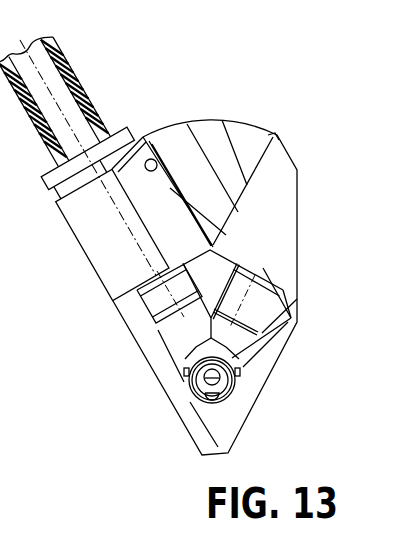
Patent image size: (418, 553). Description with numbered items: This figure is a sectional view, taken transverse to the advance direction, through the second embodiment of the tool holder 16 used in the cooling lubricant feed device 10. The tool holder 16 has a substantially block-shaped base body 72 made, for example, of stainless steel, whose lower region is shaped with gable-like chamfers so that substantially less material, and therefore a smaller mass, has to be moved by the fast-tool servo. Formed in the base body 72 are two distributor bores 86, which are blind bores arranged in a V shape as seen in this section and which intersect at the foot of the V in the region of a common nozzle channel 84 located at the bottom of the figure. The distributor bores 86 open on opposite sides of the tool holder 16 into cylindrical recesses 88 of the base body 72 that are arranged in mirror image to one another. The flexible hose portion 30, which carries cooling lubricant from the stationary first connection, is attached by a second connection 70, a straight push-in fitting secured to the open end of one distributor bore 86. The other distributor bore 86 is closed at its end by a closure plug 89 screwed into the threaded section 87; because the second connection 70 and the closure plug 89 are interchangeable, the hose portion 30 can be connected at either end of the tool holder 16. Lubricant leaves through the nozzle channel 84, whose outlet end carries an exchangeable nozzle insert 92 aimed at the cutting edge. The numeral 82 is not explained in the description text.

The cooling lubricant feed device 10 is at (127, 104).
The tool holder 16 is at (218, 142).
The flexible hose portion 30 is at (72, 73).
The second connection 70 is at (124, 226).
The base body 72 is at (237, 164).
The shaft end 82 is at (30, 33).
The nozzle channel 84 is at (200, 407).
The distributor bore 86 is at (140, 350).
The threaded section 87 is at (173, 268).
The cylindrical recess 88 is at (152, 158).
The closure plug 89 is at (260, 302).
The nozzle insert 92 is at (236, 386).